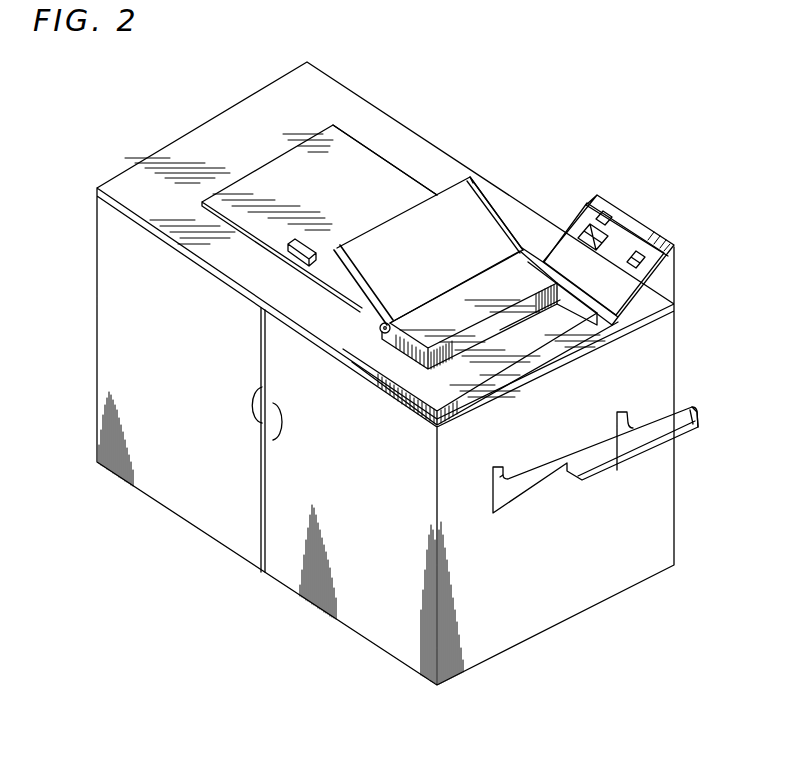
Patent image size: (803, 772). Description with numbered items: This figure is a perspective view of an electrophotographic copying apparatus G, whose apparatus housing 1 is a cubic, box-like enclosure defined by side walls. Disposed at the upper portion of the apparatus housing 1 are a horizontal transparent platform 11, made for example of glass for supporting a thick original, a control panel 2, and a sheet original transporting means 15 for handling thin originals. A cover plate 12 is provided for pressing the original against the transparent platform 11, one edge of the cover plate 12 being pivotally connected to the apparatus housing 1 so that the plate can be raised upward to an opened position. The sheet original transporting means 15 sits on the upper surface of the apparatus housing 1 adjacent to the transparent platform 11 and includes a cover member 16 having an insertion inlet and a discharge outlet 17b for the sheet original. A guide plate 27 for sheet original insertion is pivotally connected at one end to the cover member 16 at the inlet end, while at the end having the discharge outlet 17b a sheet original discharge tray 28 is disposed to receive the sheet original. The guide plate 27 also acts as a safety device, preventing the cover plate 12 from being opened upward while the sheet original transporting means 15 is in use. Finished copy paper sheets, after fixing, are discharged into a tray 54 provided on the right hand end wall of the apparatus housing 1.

The apparatus housing 1 is at (680, 351).
The control panel 2 is at (625, 238).
The electrophotographic copying apparatus G is at (614, 218).
The transparent platform 11 is at (382, 188).
The cover plate 12 is at (348, 157).
The sheet original transporting means 15 is at (516, 216).
The cover member 16 is at (521, 267).
The discharge outlet 17b is at (517, 322).
The guide plate 27 is at (468, 208).
The sheet original discharge tray 28 is at (488, 365).
The tray 54 is at (616, 465).